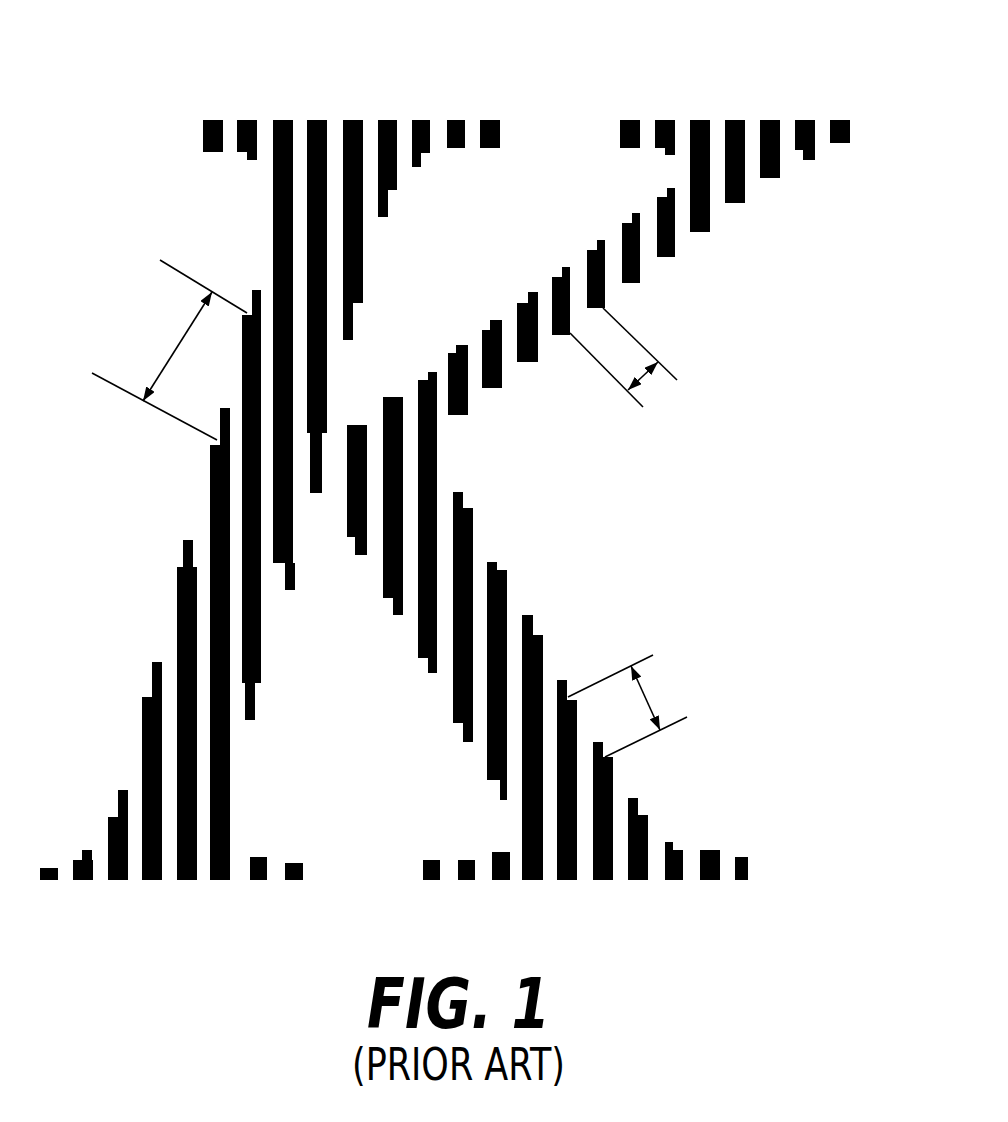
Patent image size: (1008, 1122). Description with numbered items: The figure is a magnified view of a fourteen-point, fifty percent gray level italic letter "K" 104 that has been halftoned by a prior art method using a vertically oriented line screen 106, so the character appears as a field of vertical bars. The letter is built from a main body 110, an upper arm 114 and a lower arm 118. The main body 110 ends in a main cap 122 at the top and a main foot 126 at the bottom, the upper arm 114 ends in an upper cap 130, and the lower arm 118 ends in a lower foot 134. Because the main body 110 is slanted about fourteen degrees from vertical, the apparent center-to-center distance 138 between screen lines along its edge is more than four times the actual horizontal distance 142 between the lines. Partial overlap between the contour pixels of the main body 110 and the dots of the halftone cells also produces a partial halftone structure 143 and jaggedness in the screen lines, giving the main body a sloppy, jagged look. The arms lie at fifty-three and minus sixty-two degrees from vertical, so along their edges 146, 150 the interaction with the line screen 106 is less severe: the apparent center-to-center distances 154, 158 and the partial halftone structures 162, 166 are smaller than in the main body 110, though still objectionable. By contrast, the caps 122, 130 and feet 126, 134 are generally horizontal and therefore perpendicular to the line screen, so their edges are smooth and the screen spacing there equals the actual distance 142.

The italic letter "K" 104 is at (728, 95).
The vertically oriented line screen 106 is at (670, 110).
The main body 110 is at (247, 517).
The upper arm 114 is at (648, 252).
The lower arm 118 is at (480, 655).
The main cap 122 is at (333, 135).
The main foot 126 is at (173, 868).
The upper cap 130 is at (752, 135).
The lower foot 134 is at (588, 862).
The apparent center-to-center distance 138 is at (169, 350).
The actual center-to-center distance 142 is at (212, 128).
The partial halftone structure 143 is at (255, 686).
The edge of the upper arm 146 is at (508, 308).
The edge of the lower arm 150 is at (477, 542).
The apparent center-to-center distance 154 is at (645, 380).
The apparent center-to-center distance 158 is at (648, 700).
The partial halftone structure 162 is at (598, 240).
The partial halftone structure 166 is at (493, 787).